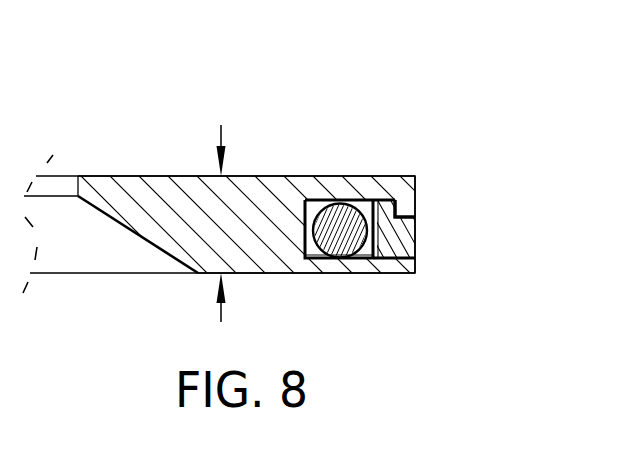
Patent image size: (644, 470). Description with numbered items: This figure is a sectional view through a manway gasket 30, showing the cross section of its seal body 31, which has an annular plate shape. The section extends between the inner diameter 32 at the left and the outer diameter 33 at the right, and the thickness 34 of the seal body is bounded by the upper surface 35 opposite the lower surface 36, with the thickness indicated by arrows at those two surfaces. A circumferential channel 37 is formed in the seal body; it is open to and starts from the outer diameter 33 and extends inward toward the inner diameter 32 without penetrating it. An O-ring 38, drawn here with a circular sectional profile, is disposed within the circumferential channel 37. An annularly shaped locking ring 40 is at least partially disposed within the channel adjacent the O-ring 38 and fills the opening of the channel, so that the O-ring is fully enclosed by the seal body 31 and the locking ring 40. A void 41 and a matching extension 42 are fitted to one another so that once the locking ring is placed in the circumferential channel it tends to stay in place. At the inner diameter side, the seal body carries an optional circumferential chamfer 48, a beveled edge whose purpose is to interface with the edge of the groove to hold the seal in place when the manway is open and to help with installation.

The manway gasket 30 is at (342, 66).
The seal body 31 is at (179, 198).
The inner diameter 32 is at (78, 195).
The outer diameter 33 is at (415, 185).
The thickness 34 is at (219, 209).
The upper surface 35 is at (287, 176).
The lower surface 36 is at (292, 275).
The circumferential channel 37 is at (367, 209).
The O-ring 38 is at (352, 238).
The locking ring 40 is at (404, 247).
The void 41 is at (403, 213).
The extension 42 is at (403, 213).
The circumferential chamfer 48 is at (147, 238).